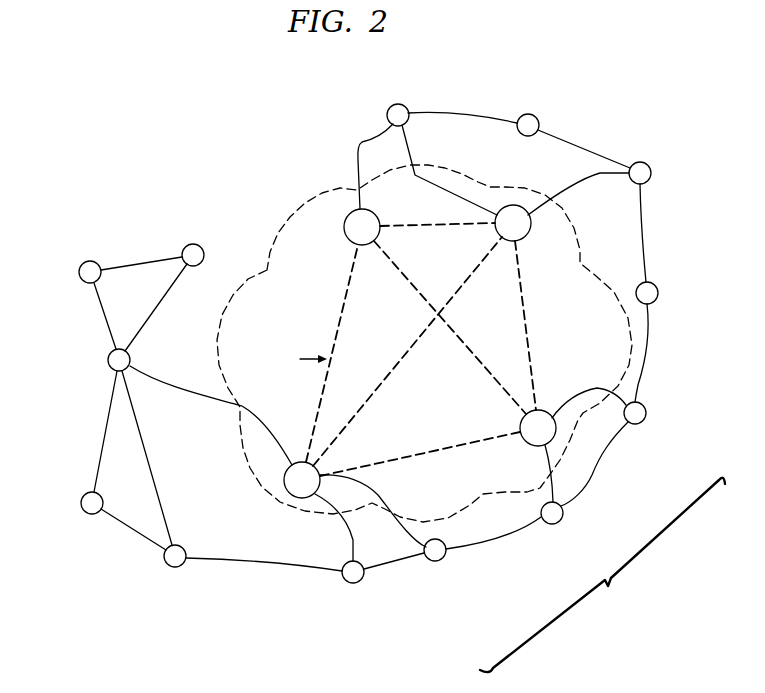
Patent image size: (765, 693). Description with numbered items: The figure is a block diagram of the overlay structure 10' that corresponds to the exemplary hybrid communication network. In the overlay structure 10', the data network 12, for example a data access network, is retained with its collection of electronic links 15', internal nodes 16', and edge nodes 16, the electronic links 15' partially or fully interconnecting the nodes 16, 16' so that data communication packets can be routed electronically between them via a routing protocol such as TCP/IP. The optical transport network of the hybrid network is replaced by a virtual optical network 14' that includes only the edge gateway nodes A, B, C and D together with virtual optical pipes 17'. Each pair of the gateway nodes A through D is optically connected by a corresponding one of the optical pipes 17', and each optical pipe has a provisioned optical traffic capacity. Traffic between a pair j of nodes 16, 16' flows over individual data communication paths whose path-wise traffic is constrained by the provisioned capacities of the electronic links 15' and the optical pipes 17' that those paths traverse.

The overlay structure 10' is at (602, 575).
The data network 12 is at (88, 573).
The virtual optical network 14' is at (424, 343).
The electronic link 15' is at (371, 341).
The edge node 16 is at (380, 343).
The internal node 16' is at (371, 297).
The virtual optical pipe 17' is at (436, 353).